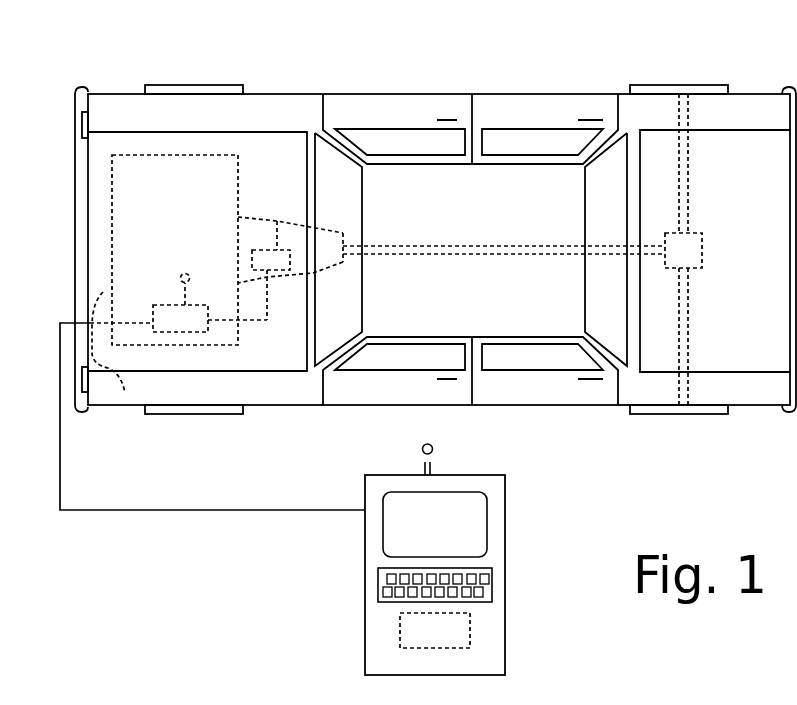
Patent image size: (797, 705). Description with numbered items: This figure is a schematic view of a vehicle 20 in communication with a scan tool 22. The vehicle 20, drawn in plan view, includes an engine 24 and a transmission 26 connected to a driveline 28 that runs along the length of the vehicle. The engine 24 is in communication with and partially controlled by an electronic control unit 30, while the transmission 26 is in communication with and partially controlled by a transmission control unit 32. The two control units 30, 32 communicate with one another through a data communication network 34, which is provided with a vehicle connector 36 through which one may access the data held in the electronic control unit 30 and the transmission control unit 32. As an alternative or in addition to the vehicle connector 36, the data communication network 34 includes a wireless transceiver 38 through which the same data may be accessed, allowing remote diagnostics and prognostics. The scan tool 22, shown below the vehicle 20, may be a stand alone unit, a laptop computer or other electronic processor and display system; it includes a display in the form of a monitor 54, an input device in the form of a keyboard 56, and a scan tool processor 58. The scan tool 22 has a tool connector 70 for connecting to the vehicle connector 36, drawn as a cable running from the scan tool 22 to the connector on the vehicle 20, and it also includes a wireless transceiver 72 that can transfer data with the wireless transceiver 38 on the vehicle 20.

The vehicle 20 is at (479, 66).
The scan tool 22 is at (543, 551).
The engine 24 is at (112, 197).
The transmission 26 is at (267, 217).
The driveline 28 is at (410, 245).
The electronic control unit 30 is at (185, 332).
The transmission control unit 32 is at (277, 217).
The data communication network 34 is at (257, 323).
The vehicle connector 36 is at (103, 293).
The wireless transceiver 38 is at (177, 293).
The monitor 54 is at (383, 530).
The keyboard 56 is at (492, 584).
The scan tool processor 58 is at (400, 630).
The tool connector 70 is at (125, 393).
The wireless transceiver 72 is at (431, 462).